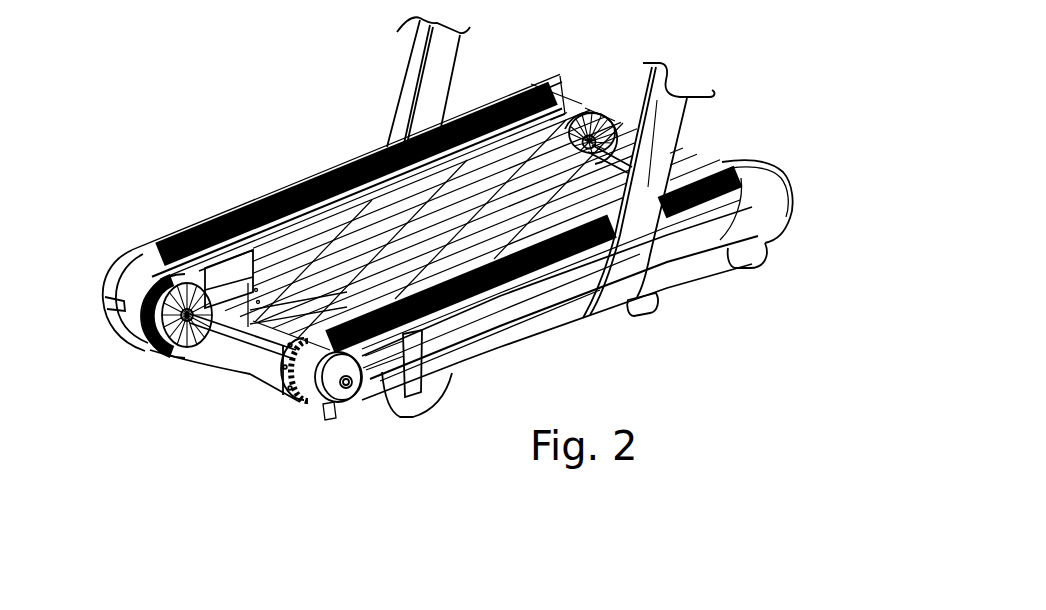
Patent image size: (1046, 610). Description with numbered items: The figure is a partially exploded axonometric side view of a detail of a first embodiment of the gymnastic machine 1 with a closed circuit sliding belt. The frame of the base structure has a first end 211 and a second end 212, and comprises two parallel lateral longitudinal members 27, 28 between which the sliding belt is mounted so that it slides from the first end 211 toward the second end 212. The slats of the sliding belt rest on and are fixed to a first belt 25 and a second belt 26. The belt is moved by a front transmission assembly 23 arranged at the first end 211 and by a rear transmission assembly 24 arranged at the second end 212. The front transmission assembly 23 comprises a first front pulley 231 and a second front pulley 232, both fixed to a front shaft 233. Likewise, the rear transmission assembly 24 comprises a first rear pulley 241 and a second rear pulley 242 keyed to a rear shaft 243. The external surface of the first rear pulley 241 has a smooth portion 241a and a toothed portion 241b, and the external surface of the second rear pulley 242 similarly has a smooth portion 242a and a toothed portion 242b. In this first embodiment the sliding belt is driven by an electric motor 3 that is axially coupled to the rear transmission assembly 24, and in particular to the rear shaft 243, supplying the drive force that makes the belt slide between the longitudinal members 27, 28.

The gymnastic machine 1 is at (765, 85).
The first end 211 is at (740, 164).
The second end 212 is at (129, 256).
The front transmission assembly 23 is at (613, 100).
The first front pulley 231 is at (603, 108).
The second front pulley 232 is at (696, 163).
The front shaft 233 is at (622, 157).
The rear transmission assembly 24 is at (235, 401).
The first rear pulley 241 is at (150, 380).
The smooth portion 241a is at (180, 347).
The toothed portion 241b is at (143, 347).
The second rear pulley 242 is at (274, 455).
The smooth portion 242a is at (292, 385).
The toothed portion 242b is at (297, 396).
The rear shaft 243 is at (248, 343).
The first belt 25 is at (226, 265).
The second belt 26 is at (284, 385).
The lateral longitudinal member 27 is at (550, 320).
The lateral longitudinal member 28 is at (112, 300).
The electric motor 3 is at (355, 438).